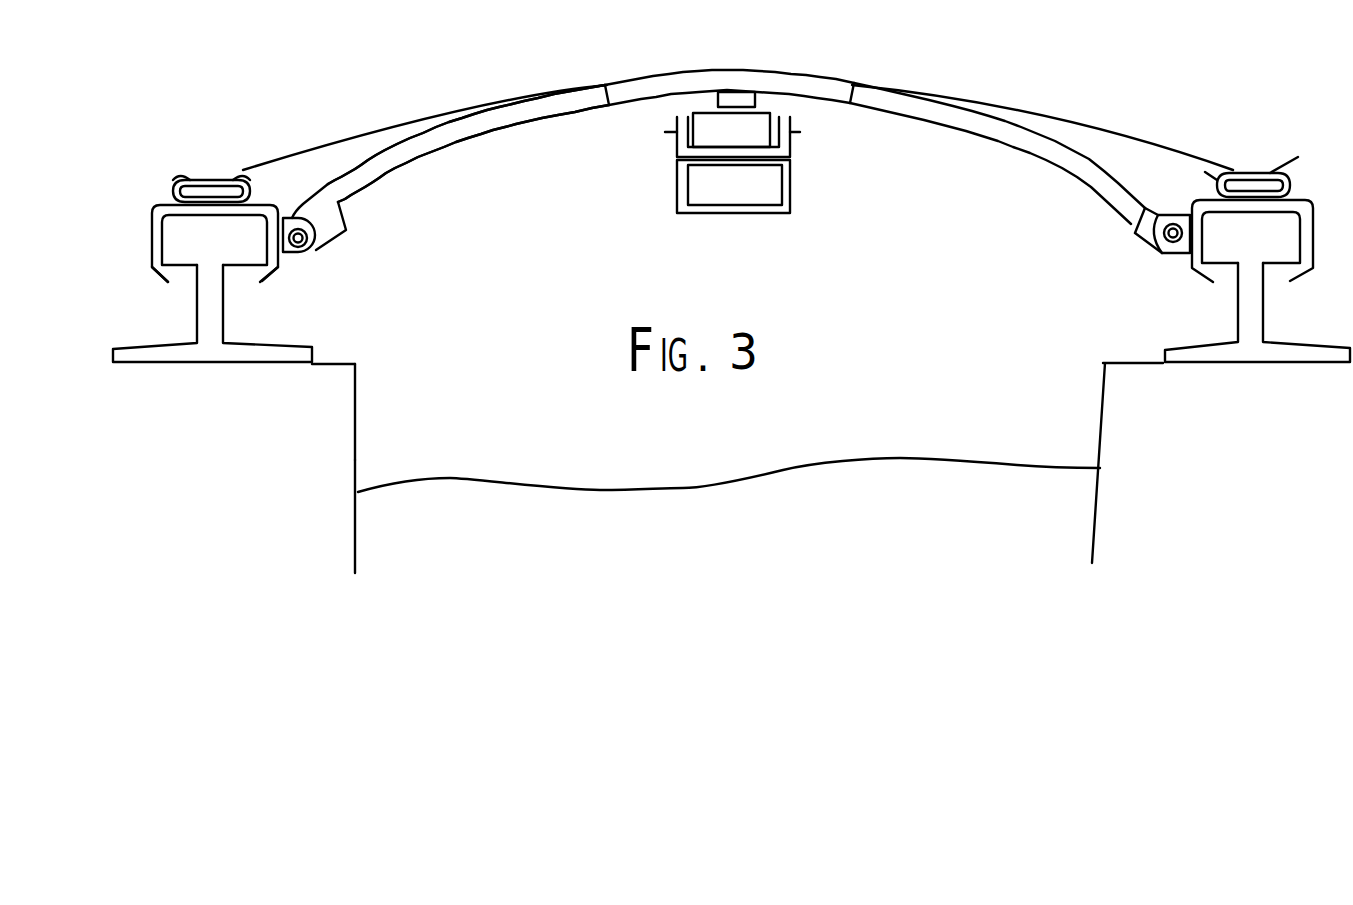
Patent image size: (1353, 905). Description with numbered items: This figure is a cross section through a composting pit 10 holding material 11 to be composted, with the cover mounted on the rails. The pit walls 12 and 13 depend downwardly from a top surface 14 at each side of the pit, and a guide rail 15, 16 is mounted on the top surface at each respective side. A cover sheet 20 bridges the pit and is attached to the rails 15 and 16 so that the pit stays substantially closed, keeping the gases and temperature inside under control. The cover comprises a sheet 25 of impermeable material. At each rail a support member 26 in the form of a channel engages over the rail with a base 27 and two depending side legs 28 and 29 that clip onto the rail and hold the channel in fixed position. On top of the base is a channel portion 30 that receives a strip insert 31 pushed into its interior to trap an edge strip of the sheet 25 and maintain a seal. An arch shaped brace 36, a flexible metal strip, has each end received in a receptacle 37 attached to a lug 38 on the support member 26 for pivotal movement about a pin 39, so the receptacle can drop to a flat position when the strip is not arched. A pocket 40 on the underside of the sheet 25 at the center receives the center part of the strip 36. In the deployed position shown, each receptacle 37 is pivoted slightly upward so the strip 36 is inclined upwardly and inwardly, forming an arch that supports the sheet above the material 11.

The pit 10 is at (357, 551).
The material 11 is at (746, 569).
The pit wall 12 is at (355, 440).
The pit wall 13 is at (1105, 444).
The top surface 14 is at (313, 366).
The guide rail 15 is at (222, 317).
The guide rail 16 is at (1238, 308).
The cover sheet 20 is at (523, 98).
The sheet 25 is at (350, 133).
The support member 26 is at (146, 238).
The base 27 is at (270, 198).
The side leg 28 is at (160, 277).
The side leg 29 is at (258, 283).
The channel portion 30 is at (190, 175).
The strip insert 31 is at (232, 172).
The arch shaped brace 36 is at (482, 135).
The receptacle 37 is at (346, 230).
The lug 38 is at (376, 153).
The pin 39 is at (310, 252).
The pocket 40 is at (682, 88).